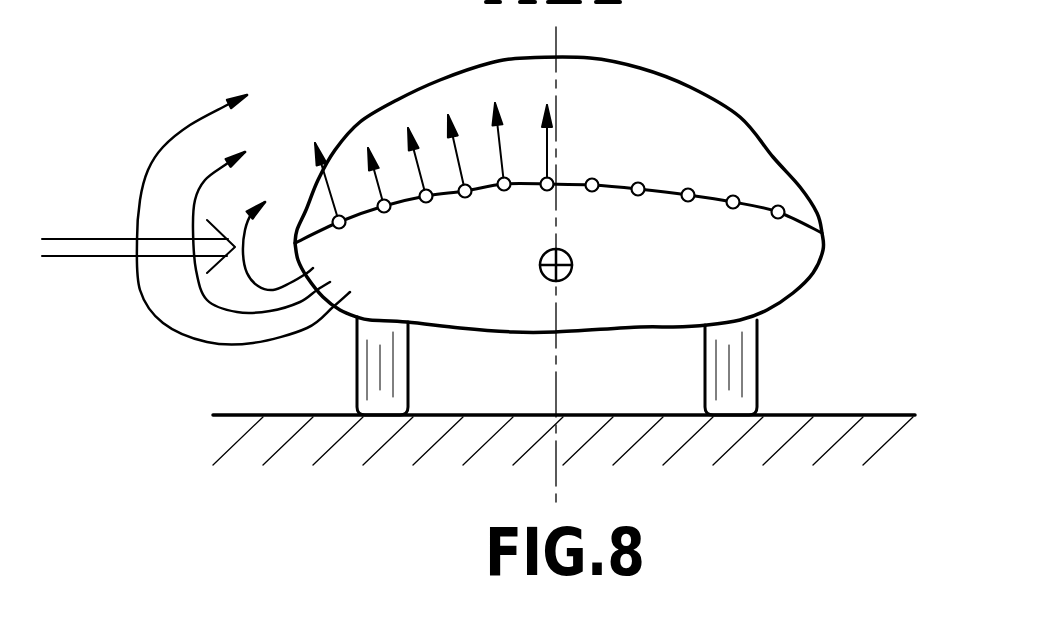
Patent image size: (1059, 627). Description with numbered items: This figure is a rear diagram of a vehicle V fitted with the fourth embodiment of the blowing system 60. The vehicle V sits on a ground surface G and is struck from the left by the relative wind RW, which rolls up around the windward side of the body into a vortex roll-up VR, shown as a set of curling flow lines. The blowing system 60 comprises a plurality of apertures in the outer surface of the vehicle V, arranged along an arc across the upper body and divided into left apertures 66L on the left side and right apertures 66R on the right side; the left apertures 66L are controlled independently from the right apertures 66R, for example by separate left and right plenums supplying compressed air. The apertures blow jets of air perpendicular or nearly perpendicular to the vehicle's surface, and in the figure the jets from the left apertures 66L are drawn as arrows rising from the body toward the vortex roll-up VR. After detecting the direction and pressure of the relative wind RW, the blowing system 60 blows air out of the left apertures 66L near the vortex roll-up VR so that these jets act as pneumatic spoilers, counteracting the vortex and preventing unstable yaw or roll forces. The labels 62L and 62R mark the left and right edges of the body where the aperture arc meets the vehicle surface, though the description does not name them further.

The blowing system 60 is at (367, 78).
The left fairing edge 62L is at (360, 213).
The right fairing edge 62R is at (752, 200).
The left apertures 66L is at (422, 203).
The right apertures 66R is at (686, 182).
The vehicle V is at (460, 296).
The relative wind RW is at (138, 242).
The vortex roll-up VR is at (160, 336).
The ground G is at (564, 440).